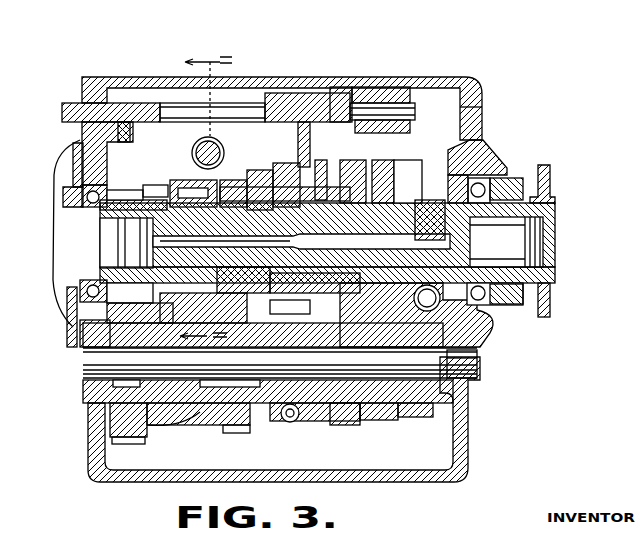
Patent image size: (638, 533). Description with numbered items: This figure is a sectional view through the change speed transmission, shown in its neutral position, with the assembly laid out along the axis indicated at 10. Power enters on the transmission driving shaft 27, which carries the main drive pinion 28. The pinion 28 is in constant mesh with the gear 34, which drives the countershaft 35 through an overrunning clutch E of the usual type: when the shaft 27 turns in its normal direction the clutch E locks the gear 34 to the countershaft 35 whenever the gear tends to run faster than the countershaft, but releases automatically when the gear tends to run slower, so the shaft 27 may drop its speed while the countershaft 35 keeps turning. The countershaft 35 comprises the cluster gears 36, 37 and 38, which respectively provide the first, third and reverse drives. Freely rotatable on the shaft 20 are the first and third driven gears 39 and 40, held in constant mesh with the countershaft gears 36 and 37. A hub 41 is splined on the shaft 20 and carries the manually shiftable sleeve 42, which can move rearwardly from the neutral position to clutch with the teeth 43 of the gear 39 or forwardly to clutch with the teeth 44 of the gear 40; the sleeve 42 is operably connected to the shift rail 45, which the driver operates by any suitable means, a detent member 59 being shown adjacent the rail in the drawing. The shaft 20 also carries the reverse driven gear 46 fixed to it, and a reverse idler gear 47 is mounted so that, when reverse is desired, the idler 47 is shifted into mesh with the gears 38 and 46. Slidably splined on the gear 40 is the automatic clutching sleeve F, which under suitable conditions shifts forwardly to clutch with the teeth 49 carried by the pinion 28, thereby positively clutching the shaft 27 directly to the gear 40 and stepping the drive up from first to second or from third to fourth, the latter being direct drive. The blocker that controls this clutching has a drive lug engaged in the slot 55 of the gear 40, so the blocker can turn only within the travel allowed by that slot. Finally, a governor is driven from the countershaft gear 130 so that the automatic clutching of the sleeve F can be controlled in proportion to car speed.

The transmission assembly axis / direction arrow 10 is at (206, 201).
The shaft 20 is at (543, 207).
The transmission driving shaft 27 is at (52, 228).
The main drive pinion 28 is at (137, 200).
The gear 34 is at (124, 444).
The countershaft 35 is at (328, 422).
The cluster gear 36 is at (370, 420).
The cluster gear 37 is at (230, 433).
The cluster gear 38 is at (405, 410).
The first driven gear 39 is at (378, 160).
The third driven gear 40 is at (237, 180).
The hub 41 is at (297, 228).
The manually shiftable sleeve 42 is at (320, 160).
The teeth 43 is at (352, 163).
The teeth 44 is at (262, 172).
The shift rail 45 is at (252, 108).
The reverse driven gear 46 is at (397, 163).
The reverse idler gear 47 is at (400, 348).
The teeth 49 is at (147, 200).
The slot 55 is at (173, 190).
The shifter ball 59 is at (212, 140).
The countershaft gear 130 is at (297, 330).
The overrunning clutch E is at (165, 410).
The automatic clutching sleeve F is at (178, 195).